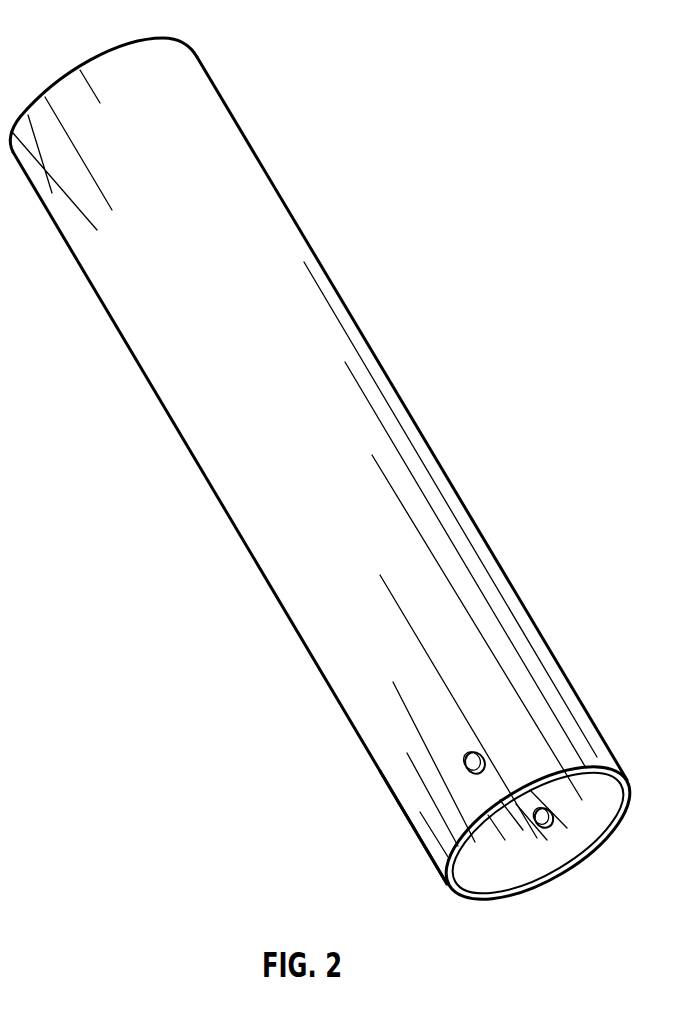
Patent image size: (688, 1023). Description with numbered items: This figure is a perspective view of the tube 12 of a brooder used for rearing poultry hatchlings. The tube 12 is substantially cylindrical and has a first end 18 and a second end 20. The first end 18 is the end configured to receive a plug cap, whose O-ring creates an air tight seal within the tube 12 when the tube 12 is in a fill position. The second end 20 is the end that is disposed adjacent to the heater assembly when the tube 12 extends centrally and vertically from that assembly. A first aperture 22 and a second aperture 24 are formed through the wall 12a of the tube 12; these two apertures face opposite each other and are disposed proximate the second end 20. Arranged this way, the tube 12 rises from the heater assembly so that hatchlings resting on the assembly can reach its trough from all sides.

The tube 12 is at (125, 293).
The wall 12a is at (428, 768).
The first end 18 is at (138, 40).
The second end 20 is at (557, 868).
The first aperture 22 is at (477, 750).
The second aperture 24 is at (547, 815).